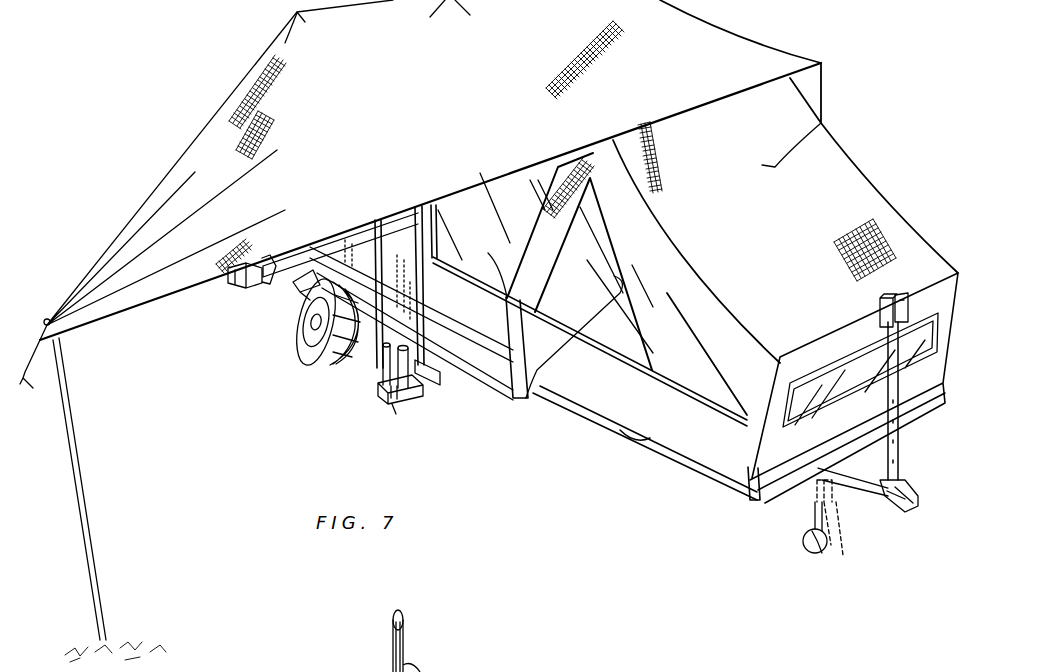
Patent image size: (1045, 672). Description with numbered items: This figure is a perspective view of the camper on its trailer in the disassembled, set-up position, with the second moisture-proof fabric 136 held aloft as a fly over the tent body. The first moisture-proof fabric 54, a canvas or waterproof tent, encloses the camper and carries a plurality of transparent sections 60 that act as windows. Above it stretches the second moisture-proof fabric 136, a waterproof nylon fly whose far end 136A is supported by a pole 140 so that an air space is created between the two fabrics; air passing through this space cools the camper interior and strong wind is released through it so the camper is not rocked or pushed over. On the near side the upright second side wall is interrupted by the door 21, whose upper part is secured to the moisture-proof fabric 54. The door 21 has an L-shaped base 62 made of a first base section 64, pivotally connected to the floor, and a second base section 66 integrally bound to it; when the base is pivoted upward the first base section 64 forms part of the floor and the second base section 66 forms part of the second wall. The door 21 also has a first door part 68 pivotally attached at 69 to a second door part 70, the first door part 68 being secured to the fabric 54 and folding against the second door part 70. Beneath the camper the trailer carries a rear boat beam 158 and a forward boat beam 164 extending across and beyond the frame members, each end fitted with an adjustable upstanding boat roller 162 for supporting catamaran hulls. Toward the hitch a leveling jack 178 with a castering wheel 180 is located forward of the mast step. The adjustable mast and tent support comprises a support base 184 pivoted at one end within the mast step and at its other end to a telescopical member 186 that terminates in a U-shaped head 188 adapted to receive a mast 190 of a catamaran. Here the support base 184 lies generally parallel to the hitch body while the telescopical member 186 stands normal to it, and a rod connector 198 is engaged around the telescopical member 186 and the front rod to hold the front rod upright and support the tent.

The door 21 is at (400, 300).
The first moisture-proof fabric 54 is at (822, 121).
The transparent sections 60 is at (528, 397).
The L-shaped base 62 is at (386, 414).
The first base section 64 is at (402, 410).
The second base section 66 is at (395, 404).
The first door part 68 is at (395, 277).
The pivot 69 is at (317, 276).
The second door part 70 is at (327, 365).
The second moisture-proof fabric 136 is at (438, 106).
The far end of the second moisture-proof fabric 136A is at (48, 320).
The pole 140 is at (100, 582).
The rear boat beam 158 is at (310, 268).
The adjustable upstanding boat roller 162 is at (393, 282).
The forward boat beam 164 is at (426, 362).
The leveling jack 178 is at (838, 514).
The castering wheel 180 is at (822, 557).
The support base 184 is at (907, 512).
The telescopical member 186 is at (903, 407).
The U-shaped head 188 is at (881, 296).
The mast 190 is at (430, 671).
The rod connector 198 is at (907, 292).